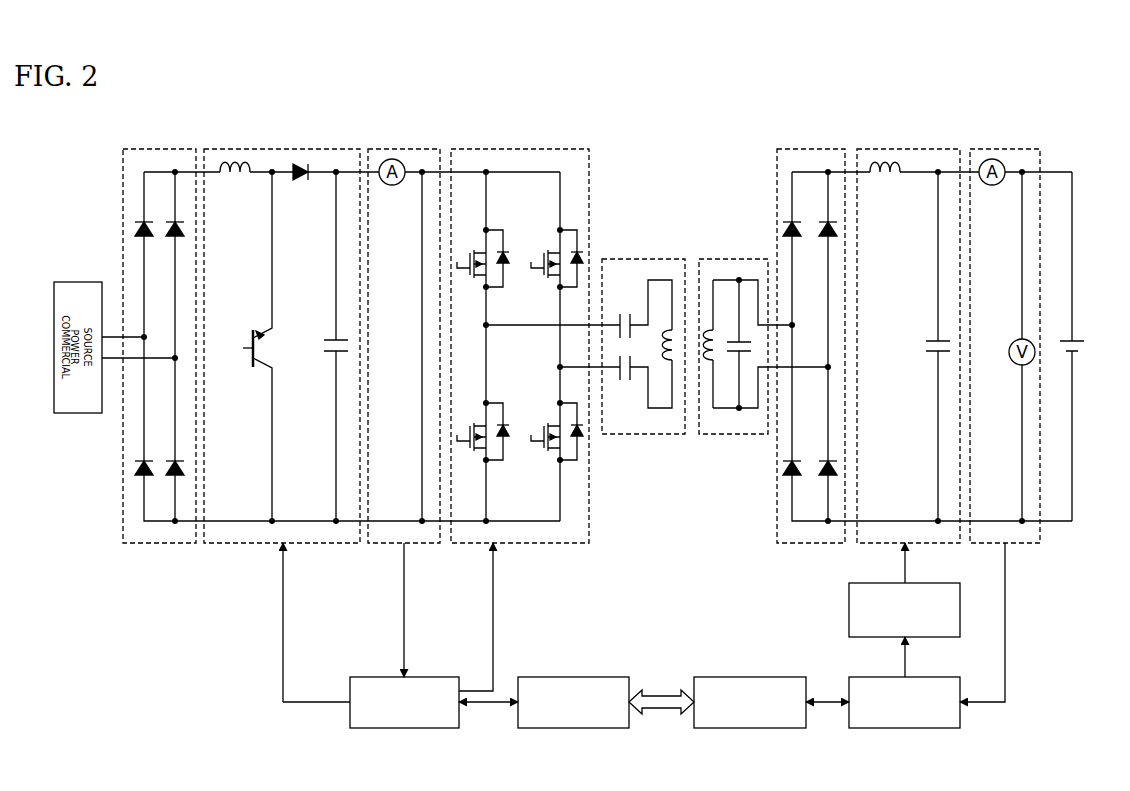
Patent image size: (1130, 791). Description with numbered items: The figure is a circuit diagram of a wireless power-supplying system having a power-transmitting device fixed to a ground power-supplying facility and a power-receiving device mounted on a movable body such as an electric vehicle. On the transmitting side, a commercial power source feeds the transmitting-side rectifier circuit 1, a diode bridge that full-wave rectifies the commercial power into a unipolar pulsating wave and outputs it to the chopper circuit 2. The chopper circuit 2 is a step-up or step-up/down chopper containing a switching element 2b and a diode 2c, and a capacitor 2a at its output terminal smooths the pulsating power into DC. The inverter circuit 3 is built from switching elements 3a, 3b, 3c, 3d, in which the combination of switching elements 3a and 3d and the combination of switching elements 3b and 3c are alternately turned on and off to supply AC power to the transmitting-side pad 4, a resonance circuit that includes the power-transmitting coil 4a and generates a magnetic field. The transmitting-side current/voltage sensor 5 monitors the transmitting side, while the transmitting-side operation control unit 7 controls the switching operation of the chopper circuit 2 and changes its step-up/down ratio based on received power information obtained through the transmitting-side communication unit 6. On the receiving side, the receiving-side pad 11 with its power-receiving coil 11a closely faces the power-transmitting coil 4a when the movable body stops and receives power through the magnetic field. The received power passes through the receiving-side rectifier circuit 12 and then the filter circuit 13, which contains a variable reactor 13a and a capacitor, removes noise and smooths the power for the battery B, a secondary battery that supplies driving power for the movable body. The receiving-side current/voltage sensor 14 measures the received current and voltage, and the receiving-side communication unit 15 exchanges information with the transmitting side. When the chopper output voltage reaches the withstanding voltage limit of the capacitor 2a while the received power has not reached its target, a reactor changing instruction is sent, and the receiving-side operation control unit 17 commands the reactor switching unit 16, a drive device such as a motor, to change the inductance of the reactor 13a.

The transmitting-side rectifier circuit 1 is at (163, 149).
The chopper circuit 2 is at (271, 319).
The capacitor 2a is at (334, 338).
The switching element 2b is at (252, 335).
The diode 2c is at (300, 164).
The inverter circuit 3 is at (535, 319).
The switching element 3a is at (470, 246).
The switching element 3b is at (470, 419).
The switching element 3c is at (544, 246).
The switching element 3d is at (544, 419).
The transmitting-side pad 4 is at (643, 314).
The power-transmitting coil 4a is at (667, 345).
The transmitting-side current/voltage sensor 5 is at (407, 149).
The transmitting-side communication unit 6 is at (577, 676).
The transmitting-side operation control unit 7 is at (428, 676).
The receiving-side pad 11 is at (760, 334).
The power-receiving coil 11a is at (714, 362).
The receiving-side rectifier circuit 12 is at (816, 149).
The filter circuit 13 is at (918, 320).
The reactor 13a is at (887, 166).
The receiving-side current/voltage sensor 14 is at (1008, 149).
The receiving-side communication unit 15 is at (752, 676).
The reactor switching unit 16 is at (921, 582).
The receiving-side operation control unit 17 is at (921, 676).
The battery B is at (1080, 339).